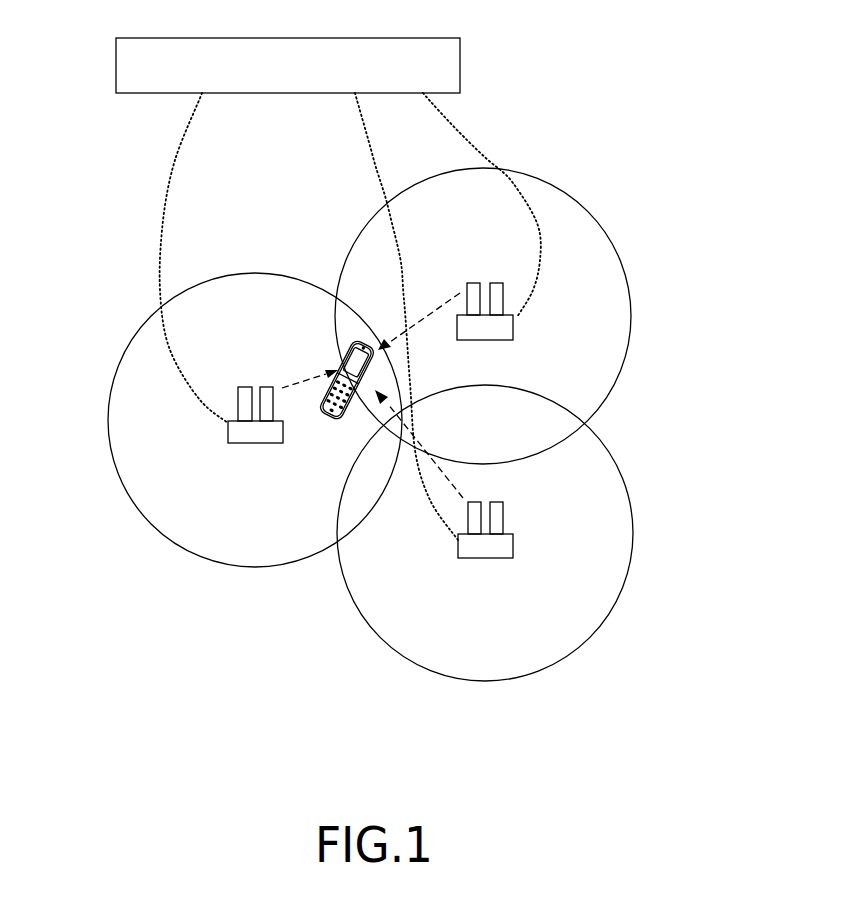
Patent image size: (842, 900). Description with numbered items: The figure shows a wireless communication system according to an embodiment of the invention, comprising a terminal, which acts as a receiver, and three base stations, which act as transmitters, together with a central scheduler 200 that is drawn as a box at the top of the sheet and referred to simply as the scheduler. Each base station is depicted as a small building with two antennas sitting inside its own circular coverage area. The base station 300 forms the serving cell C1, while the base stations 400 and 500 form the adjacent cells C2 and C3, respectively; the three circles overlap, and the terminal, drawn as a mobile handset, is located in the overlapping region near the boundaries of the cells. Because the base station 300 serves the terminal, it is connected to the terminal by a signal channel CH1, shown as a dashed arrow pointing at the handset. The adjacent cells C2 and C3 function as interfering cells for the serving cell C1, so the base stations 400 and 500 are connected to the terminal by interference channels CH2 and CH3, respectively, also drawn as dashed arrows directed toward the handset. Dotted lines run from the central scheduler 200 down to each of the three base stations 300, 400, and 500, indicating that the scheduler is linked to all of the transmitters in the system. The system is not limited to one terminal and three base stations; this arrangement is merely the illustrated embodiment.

The central scheduler 200 is at (461, 66).
The base station 300 is at (262, 443).
The base station 400 is at (490, 340).
The base station 500 is at (490, 558).
The serving cell C1 is at (108, 421).
The adjacent cell C2 is at (632, 313).
The adjacent cell C3 is at (633, 530).
The signal channel CH1 is at (283, 386).
The interference channel CH2 is at (432, 313).
The interference channel CH3 is at (450, 480).